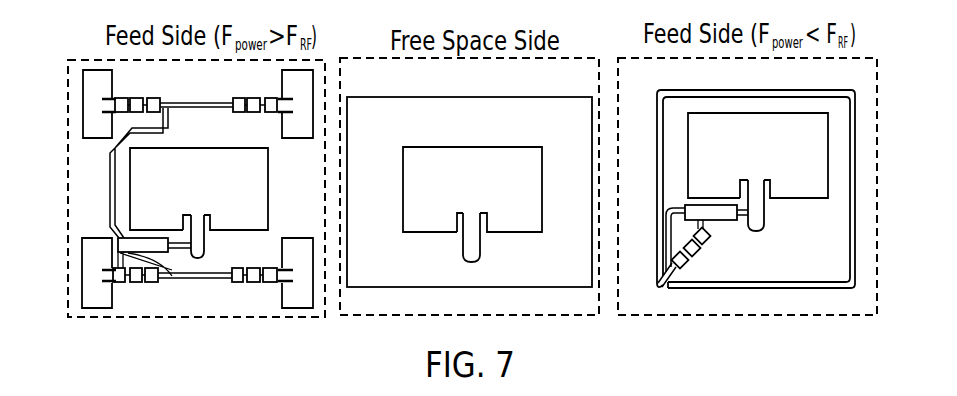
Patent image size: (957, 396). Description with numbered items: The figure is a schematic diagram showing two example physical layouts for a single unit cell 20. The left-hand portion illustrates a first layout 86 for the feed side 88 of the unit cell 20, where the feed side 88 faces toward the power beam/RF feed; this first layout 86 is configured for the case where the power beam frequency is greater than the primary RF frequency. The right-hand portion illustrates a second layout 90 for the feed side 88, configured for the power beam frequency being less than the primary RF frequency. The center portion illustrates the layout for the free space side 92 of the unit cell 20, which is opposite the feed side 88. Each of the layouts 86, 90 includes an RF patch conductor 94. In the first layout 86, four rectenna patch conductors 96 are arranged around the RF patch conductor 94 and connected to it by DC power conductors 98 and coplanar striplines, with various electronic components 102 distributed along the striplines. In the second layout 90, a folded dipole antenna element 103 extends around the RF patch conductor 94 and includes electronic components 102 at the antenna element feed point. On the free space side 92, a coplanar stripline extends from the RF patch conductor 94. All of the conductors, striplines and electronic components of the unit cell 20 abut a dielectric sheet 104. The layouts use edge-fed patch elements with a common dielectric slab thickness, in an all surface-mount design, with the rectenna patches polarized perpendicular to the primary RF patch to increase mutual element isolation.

The unit cell 20 is at (88, 60).
The first layout 86 is at (82, 227).
The feed side 88 is at (208, 305).
The second layout 90 is at (690, 302).
The free space side 92 is at (568, 298).
The RF patch conductor 94 is at (215, 185).
The rectenna patch conductors 96 is at (83, 75).
The DC power conductors 98 is at (110, 177).
The electronic components 102 is at (147, 98).
The folded dipole antenna element 103 is at (113, 107).
The dielectric sheet 104 is at (230, 143).